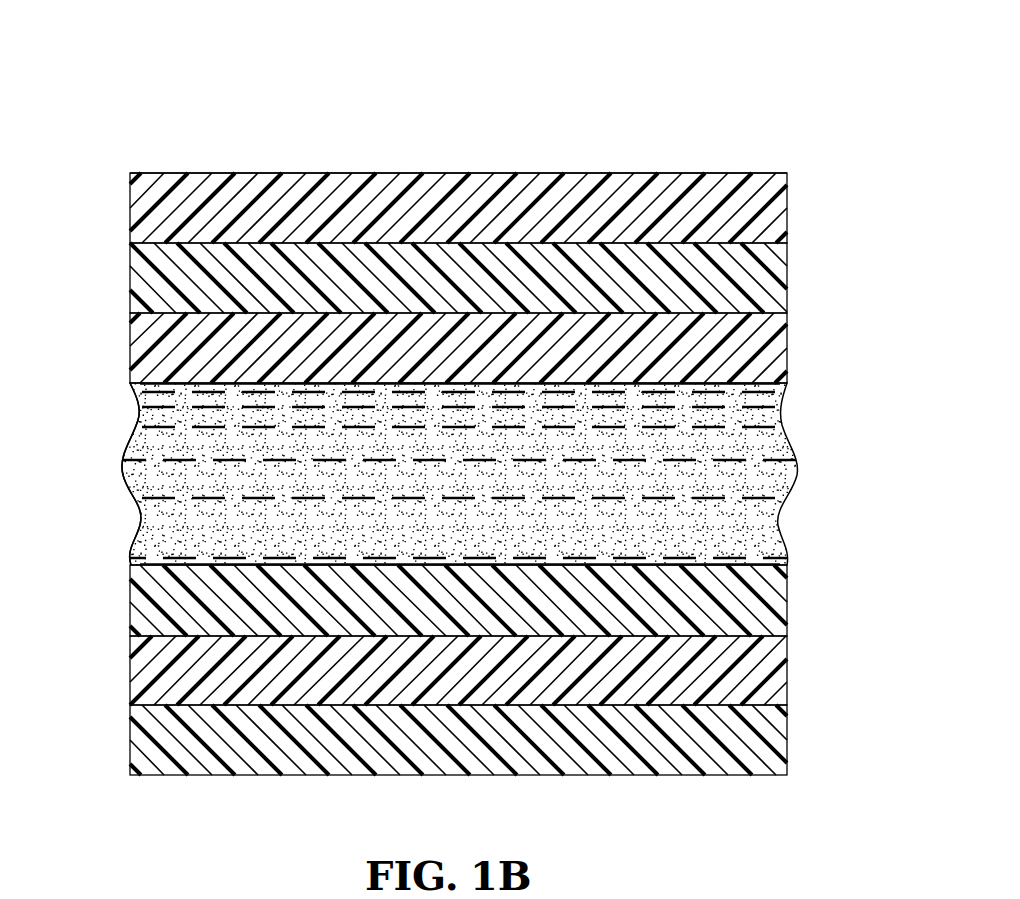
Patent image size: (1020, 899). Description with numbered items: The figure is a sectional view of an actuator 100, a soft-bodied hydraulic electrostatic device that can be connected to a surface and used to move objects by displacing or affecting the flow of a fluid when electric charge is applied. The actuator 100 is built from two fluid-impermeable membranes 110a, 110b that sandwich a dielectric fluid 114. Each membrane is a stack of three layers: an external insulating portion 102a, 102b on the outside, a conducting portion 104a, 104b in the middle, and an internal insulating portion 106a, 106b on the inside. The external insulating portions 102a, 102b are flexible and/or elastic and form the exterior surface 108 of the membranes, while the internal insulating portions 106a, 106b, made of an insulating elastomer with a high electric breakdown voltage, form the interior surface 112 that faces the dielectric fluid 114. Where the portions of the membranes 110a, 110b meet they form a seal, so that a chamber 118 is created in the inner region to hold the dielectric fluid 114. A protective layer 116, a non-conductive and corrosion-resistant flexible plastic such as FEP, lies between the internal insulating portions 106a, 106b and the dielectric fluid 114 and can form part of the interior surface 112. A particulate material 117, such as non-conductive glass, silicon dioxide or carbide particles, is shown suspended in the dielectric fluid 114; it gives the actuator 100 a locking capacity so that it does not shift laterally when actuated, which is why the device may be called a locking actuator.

The actuator 100 is at (697, 120).
The exterior surface 108 is at (768, 157).
The fluid-impermeable membrane 110a is at (122, 173).
The external insulating portion 102a is at (767, 212).
The conducting portion 104a is at (780, 272).
The internal insulating portion 106a is at (770, 347).
The dielectric fluid 114 is at (737, 460).
The interior surface 112 is at (740, 400).
The chamber 118 is at (760, 534).
The particulate material 117 is at (157, 483).
The protective layer 116 is at (140, 546).
The fluid-impermeable membrane 110b is at (122, 558).
The external insulating portion 102b is at (772, 593).
The conducting portion 104b is at (783, 675).
The internal insulating portion 106b is at (765, 732).